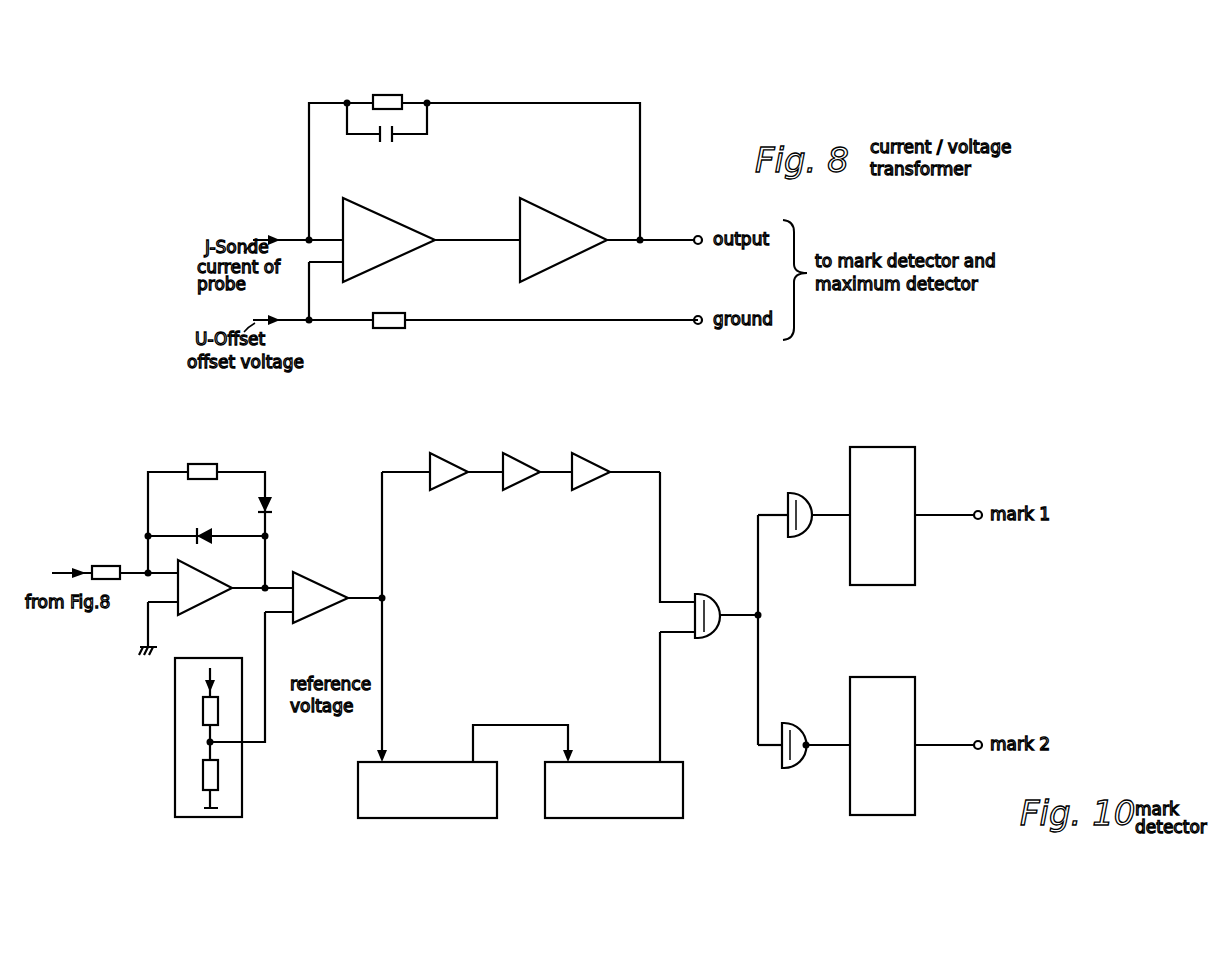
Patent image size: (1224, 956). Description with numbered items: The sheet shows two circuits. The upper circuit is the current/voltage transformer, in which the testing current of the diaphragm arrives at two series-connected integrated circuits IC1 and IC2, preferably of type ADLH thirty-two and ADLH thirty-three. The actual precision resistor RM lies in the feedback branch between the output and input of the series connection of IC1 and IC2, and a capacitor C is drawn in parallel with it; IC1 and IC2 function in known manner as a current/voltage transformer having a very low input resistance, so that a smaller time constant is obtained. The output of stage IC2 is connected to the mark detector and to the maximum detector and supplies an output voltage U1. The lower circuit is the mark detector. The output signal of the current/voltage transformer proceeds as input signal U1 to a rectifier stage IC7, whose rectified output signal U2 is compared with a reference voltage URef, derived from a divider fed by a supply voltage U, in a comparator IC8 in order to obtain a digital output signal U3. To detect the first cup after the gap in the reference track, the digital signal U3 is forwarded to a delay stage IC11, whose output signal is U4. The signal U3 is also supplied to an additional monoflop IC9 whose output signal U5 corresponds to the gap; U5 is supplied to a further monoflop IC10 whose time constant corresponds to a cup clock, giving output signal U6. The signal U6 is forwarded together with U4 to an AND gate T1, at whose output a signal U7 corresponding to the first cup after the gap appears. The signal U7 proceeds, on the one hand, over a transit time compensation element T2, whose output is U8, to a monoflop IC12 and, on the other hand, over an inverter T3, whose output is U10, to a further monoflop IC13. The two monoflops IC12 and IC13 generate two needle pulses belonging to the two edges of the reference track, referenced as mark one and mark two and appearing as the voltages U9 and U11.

In FIG. 8, the precision resistor RM is at (398, 92).
In FIG. 8, the capacitor C is at (387, 148).
In FIG. 8, the integrated circuit IC1 is at (389, 240).
In FIG. 8, the integrated circuit IC2 is at (563, 240).
In FIG. 10, the output voltage U1 is at (58, 586).
In FIG. 10, the rectifier stage IC7 is at (205, 587).
In FIG. 10, the rectified output signal U2 is at (253, 593).
In FIG. 10, the comparator IC8 is at (320, 597).
In FIG. 10, the supply voltage divider U is at (206, 690).
In FIG. 10, the reference voltage URef is at (268, 686).
In FIG. 10, the digital output signal U3 is at (385, 668).
In FIG. 10, the delay stage IC11 is at (618, 497).
In FIG. 10, the output signal of delay stage U4 is at (662, 524).
In FIG. 10, the output signal of monoflop U5 is at (485, 726).
In FIG. 10, the output signal of monoflop U6 is at (662, 730).
In FIG. 10, the monoflop IC9 is at (427, 790).
In FIG. 10, the monoflop IC10 is at (614, 790).
In FIG. 10, the AND gate T1 is at (707, 640).
In FIG. 10, the output signal of AND gate U7 is at (760, 670).
In FIG. 10, the transit time compensation element T2 is at (797, 495).
In FIG. 10, the output of T2 U8 is at (825, 512).
In FIG. 10, the monoflop IC12 is at (882, 516).
In FIG. 10, the mark 1 signal U9 is at (937, 511).
In FIG. 10, the inverter T3 is at (783, 760).
In FIG. 10, the output of T3 U10 is at (826, 740).
In FIG. 10, the monoflop IC13 is at (882, 746).
In FIG. 10, the mark 2 signal U11 is at (938, 740).